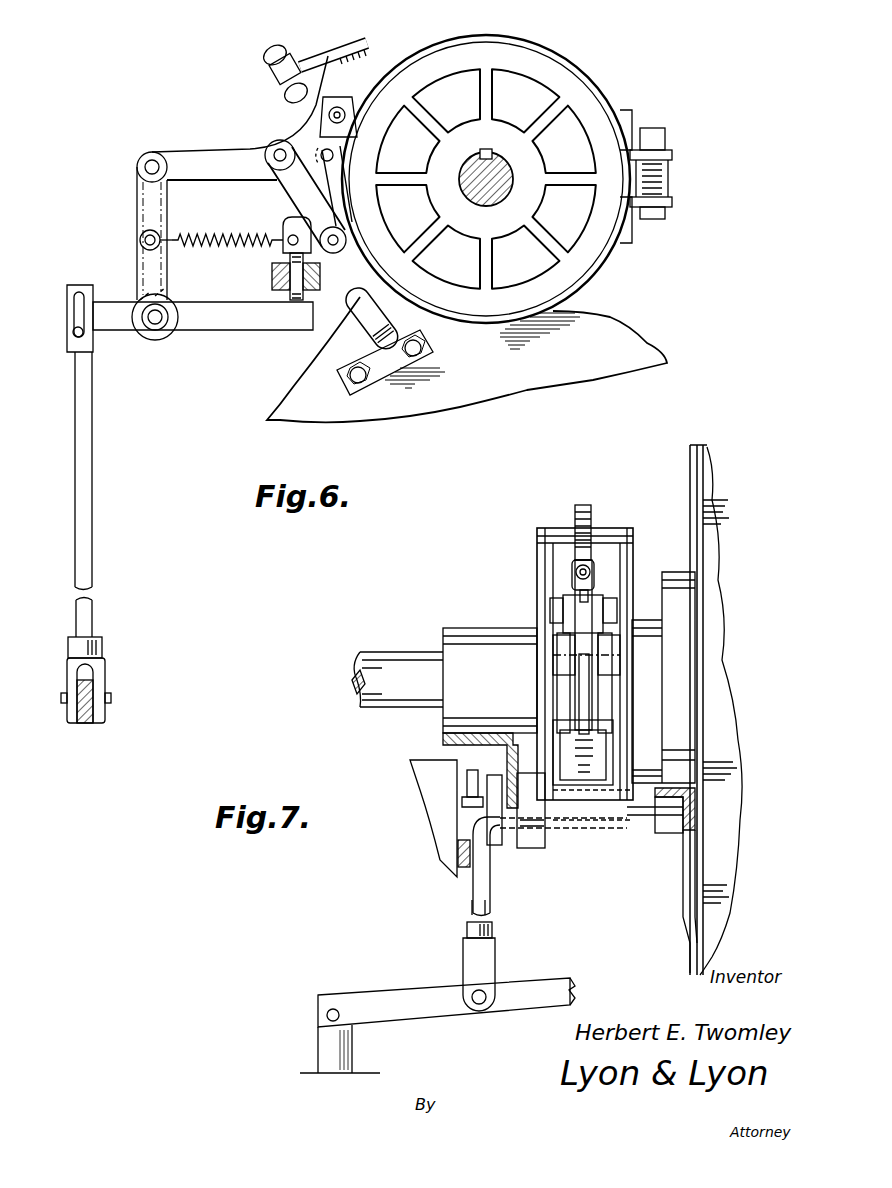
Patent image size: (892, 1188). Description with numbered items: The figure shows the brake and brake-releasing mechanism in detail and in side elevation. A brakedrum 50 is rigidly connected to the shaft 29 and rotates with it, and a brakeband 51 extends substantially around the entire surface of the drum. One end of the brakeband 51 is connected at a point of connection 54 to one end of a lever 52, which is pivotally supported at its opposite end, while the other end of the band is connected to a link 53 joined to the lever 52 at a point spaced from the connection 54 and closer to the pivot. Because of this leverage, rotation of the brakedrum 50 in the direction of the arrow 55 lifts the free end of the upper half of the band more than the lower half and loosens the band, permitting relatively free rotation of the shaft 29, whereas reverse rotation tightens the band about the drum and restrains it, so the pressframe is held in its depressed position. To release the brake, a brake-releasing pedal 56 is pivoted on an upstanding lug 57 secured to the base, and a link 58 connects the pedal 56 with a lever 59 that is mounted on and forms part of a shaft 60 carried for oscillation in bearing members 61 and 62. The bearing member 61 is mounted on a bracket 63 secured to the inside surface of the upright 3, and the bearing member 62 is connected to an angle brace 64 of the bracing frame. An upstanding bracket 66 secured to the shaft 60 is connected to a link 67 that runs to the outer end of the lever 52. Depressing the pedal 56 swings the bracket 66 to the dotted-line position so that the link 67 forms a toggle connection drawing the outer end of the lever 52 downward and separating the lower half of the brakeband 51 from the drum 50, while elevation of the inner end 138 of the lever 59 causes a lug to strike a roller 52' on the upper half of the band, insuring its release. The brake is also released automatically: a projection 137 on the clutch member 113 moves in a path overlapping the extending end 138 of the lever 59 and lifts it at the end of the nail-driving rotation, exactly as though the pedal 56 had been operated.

In FIG. 7, the upright 3 is at (718, 735).
In FIG. 6, the shaft 29 is at (505, 175).
In FIG. 7, the shaft 29 is at (390, 665).
In FIG. 6, the brakedrum 50 is at (550, 63).
In FIG. 7, the brakedrum 50 is at (537, 564).
In FIG. 6, the brakeband 51 is at (596, 90).
In FIG. 7, the brakeband 51 is at (560, 535).
In FIG. 6, the lever 52 is at (232, 119).
In FIG. 7, the lever 52 is at (607, 641).
In FIG. 6, the roller 52' is at (350, 185).
In FIG. 7, the roller 52' is at (608, 652).
In FIG. 6, the link 53 is at (290, 190).
In FIG. 6, the point of connection 54 is at (342, 105).
In FIG. 6, the arrow 55 is at (583, 152).
In FIG. 6, the brake-releasing pedal 56 is at (92, 697).
In FIG. 7, the brake-releasing pedal 56 is at (555, 990).
In FIG. 7, the upstanding lug 57 is at (355, 1047).
In FIG. 6, the link 58 is at (85, 500).
In FIG. 7, the link 58 is at (487, 960).
In FIG. 6, the lever 59 is at (118, 318).
In FIG. 7, the lever 59 is at (585, 695).
In FIG. 6, the shaft 60 is at (155, 322).
In FIG. 7, the shaft 60 is at (648, 812).
In FIG. 7, the bearing member 61 is at (672, 822).
In FIG. 7, the bearing member 62 is at (540, 830).
In FIG. 7, the bracket 63 is at (695, 812).
In FIG. 7, the angle brace 64 is at (443, 742).
In FIG. 6, the upstanding bracket 66 is at (165, 296).
In FIG. 7, the upstanding bracket 66 is at (617, 763).
In FIG. 6, the link 67 is at (158, 207).
In FIG. 7, the link 67 is at (603, 698).
In FIG. 6, the clutch member 113 is at (610, 338).
In FIG. 7, the clutch member 113 is at (425, 768).
In FIG. 6, the projection 137 is at (360, 318).
In FIG. 7, the projection 137 is at (458, 858).
In FIG. 6, the extending end 138 is at (318, 292).
In FIG. 7, the extending end 138 is at (472, 778).